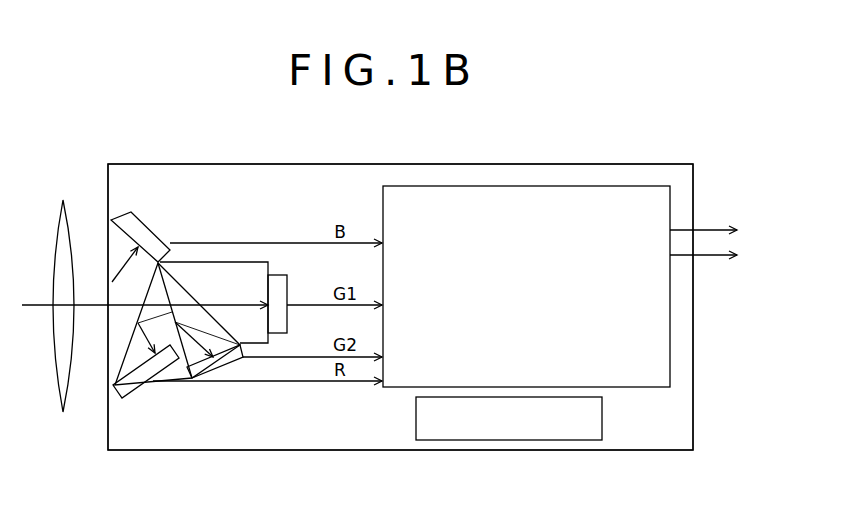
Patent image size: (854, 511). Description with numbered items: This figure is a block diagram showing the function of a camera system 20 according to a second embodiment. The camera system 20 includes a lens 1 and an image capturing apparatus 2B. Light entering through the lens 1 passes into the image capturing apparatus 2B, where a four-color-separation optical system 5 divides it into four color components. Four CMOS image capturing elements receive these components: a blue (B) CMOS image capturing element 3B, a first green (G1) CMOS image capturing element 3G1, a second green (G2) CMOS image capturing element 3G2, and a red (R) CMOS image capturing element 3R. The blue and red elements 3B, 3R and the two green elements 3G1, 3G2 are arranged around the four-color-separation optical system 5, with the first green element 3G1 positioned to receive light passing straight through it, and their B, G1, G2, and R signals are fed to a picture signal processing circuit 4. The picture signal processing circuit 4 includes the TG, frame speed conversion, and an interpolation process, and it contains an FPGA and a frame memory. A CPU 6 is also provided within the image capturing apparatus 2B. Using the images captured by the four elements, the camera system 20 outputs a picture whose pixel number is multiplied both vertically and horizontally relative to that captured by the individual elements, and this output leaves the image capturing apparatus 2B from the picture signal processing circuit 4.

The lens 1 is at (63, 204).
The camera system 20 is at (403, 148).
The image capturing apparatus 2B is at (693, 185).
The blue (B) CMOS image capturing element 3B is at (153, 232).
The first green (G1) CMOS image capturing element 3G1 is at (272, 275).
The second green (G2) CMOS image capturing element 3G2 is at (228, 364).
The red (R) CMOS image capturing element 3R is at (133, 399).
The picture signal processing circuit 4 is at (383, 200).
The four-color-separation optical system 5 is at (198, 262).
The CPU 6 is at (602, 410).